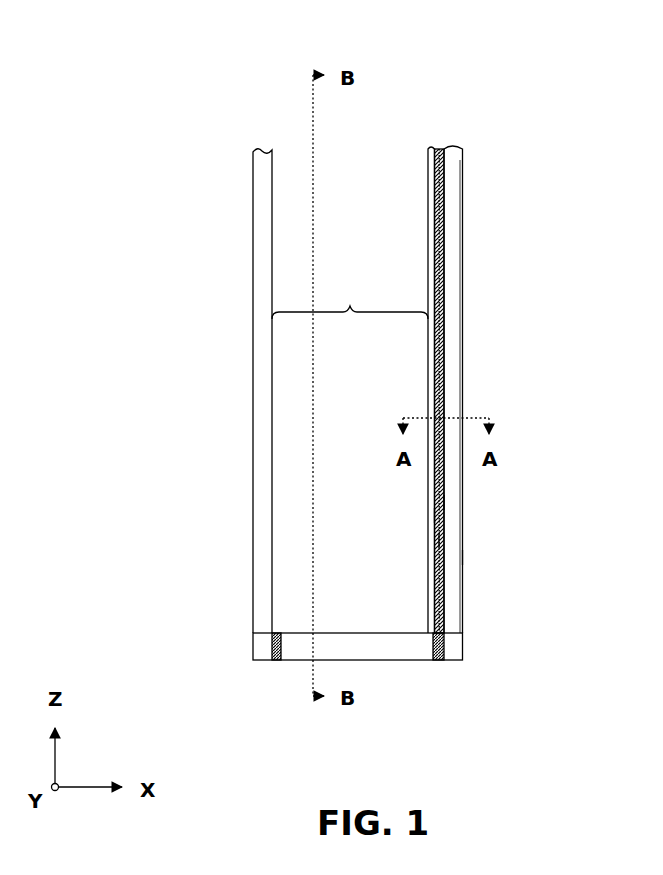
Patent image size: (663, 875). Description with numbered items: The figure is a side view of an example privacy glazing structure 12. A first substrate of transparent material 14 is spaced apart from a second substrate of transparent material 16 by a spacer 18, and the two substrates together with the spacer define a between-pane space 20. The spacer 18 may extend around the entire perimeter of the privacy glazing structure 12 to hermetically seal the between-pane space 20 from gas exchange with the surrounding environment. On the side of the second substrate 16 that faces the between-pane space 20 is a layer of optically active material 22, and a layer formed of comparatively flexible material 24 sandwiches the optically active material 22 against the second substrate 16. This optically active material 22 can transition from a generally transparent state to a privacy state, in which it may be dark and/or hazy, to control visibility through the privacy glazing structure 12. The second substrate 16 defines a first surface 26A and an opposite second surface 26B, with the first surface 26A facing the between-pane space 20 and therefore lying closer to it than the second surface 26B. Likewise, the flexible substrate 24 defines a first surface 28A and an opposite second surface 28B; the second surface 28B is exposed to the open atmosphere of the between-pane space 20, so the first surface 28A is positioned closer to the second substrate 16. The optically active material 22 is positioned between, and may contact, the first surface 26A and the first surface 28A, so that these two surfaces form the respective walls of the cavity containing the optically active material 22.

The privacy glazing structure 12 is at (576, 149).
The first substrate of transparent material 14 is at (262, 152).
The second substrate of transparent material 16 is at (450, 147).
The spacer 18 is at (323, 621).
The between-pane space 20 is at (350, 300).
The layer of optically active material 22 is at (431, 147).
The layer of comparatively flexible material 24 is at (438, 147).
The first surface of the second substrate 26A is at (444, 502).
The second surface of the second substrate 26B is at (462, 556).
The first surface of the flexible substrate 28A is at (439, 540).
The second surface of the flexible substrate 28B is at (434, 515).